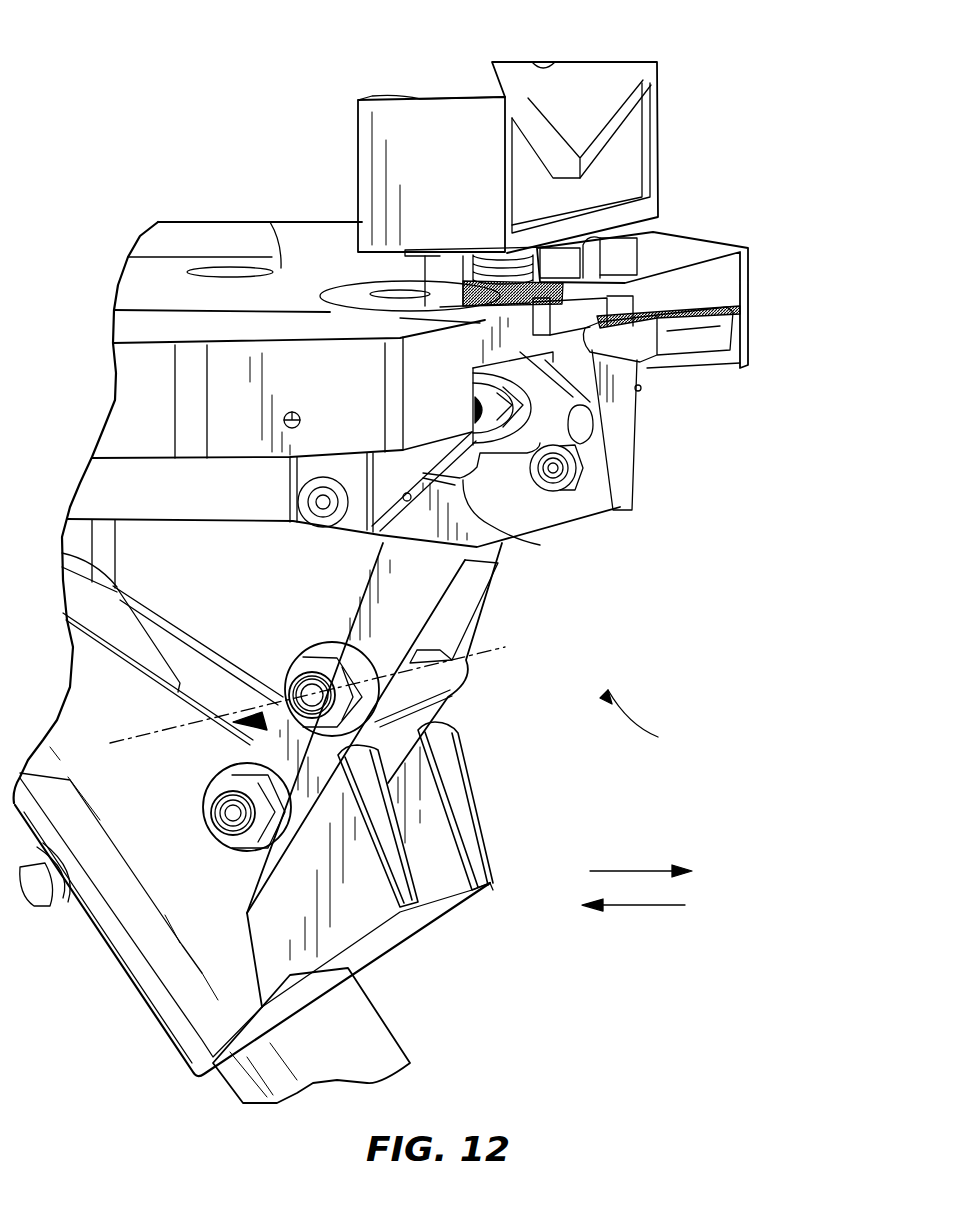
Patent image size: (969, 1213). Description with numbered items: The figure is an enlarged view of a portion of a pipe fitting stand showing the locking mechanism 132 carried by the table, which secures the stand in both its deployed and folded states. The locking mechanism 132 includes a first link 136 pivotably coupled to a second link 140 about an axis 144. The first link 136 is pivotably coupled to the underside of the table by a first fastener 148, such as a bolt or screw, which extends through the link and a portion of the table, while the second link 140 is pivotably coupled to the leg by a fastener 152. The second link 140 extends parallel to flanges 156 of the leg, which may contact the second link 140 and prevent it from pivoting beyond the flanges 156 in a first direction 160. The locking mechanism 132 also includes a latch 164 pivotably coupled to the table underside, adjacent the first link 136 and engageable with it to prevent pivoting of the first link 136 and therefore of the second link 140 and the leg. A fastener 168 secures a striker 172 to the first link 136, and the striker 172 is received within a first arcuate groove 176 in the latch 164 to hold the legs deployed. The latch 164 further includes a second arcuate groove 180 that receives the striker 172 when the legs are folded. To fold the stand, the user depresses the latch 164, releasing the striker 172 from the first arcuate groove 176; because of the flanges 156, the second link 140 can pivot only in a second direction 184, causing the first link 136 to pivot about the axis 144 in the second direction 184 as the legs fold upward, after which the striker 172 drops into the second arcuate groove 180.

The locking mechanism 132 is at (648, 719).
The first link 136 is at (473, 587).
The second link 140 is at (378, 737).
The axis 144 is at (172, 728).
The first fastener 148 is at (468, 412).
The fastener 152 is at (232, 815).
The flanges 156 is at (367, 870).
The first direction 160 is at (640, 869).
The latch 164 is at (703, 340).
The fastener 168 is at (553, 480).
The striker 172 is at (572, 412).
The first arcuate groove 176 is at (602, 440).
The second arcuate groove 180 is at (468, 488).
The second direction 184 is at (628, 907).